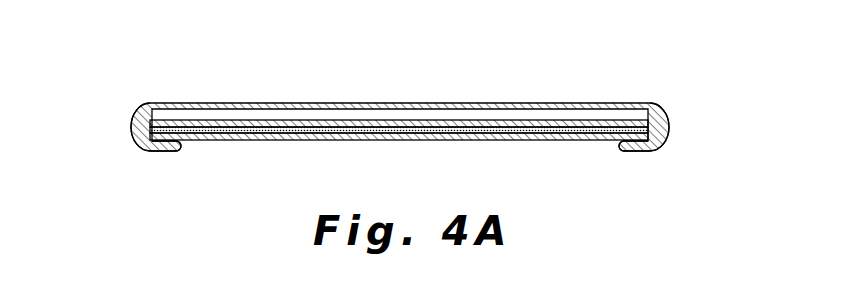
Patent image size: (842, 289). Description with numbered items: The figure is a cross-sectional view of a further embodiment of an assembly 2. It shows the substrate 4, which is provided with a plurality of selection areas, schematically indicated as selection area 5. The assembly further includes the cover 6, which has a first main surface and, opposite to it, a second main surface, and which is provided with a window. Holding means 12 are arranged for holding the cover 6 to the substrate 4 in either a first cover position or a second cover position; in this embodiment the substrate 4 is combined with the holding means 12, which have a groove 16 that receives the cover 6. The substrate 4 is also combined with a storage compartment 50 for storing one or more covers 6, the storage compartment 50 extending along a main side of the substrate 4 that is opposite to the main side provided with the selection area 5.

The assembly 2 is at (145, 95).
The substrate 4 is at (664, 132).
The selection areas 5 is at (258, 124).
The cover 6 is at (525, 142).
The holding means 12 is at (137, 152).
The groove 16 is at (162, 148).
The storage compartment 50 is at (398, 113).